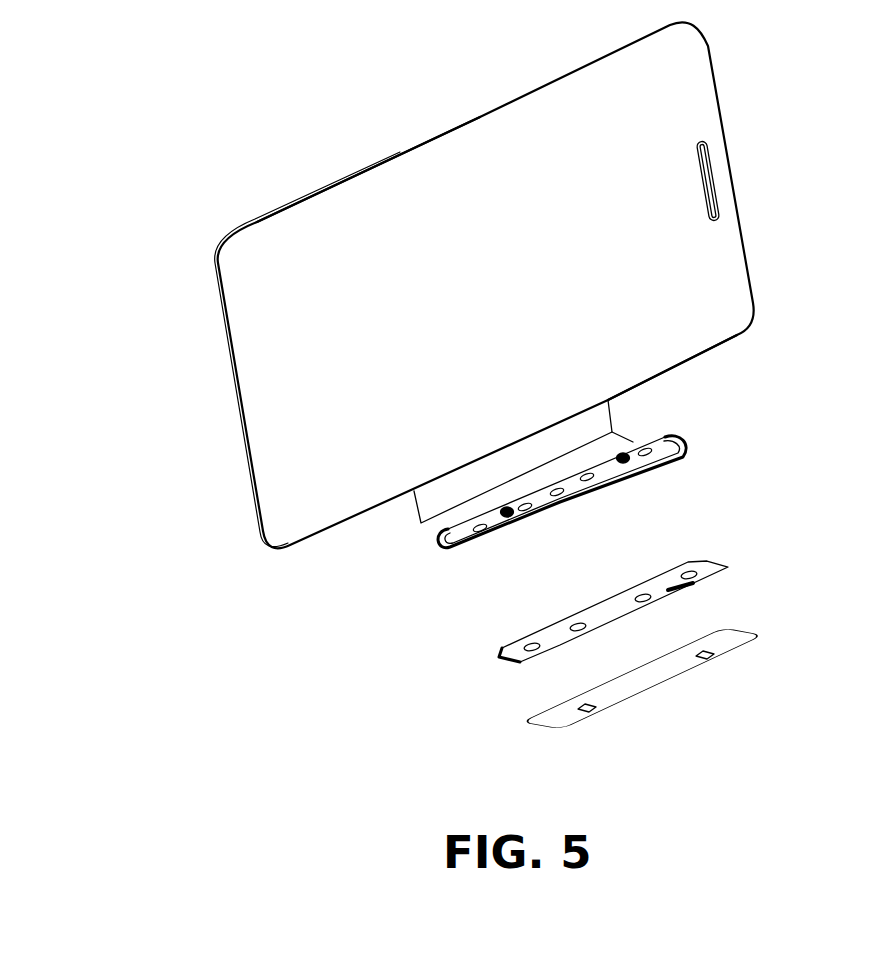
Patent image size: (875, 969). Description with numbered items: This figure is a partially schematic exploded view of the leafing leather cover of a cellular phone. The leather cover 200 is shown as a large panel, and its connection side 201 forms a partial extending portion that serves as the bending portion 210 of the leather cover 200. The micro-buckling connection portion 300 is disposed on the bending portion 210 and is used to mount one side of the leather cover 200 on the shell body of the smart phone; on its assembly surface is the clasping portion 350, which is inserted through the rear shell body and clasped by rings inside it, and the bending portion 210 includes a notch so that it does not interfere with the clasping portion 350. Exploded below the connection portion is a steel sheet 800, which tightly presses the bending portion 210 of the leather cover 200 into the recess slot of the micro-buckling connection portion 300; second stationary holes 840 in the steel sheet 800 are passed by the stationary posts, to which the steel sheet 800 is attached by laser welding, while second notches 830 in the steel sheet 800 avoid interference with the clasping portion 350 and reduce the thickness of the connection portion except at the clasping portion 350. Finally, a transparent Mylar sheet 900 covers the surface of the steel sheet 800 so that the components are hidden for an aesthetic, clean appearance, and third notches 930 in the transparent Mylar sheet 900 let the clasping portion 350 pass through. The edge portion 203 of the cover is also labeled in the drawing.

The leather cover 200 is at (295, 507).
The connection side 201 is at (690, 364).
The upper edge portion 203 is at (311, 197).
The bending portion 210 is at (582, 430).
The micro-buckling connection portion 300 is at (582, 503).
The clasping portion 350 is at (513, 530).
The steel sheet 800 is at (728, 565).
The second notches 830 is at (680, 587).
The second stationary holes 840 is at (530, 653).
The transparent Mylar sheet 900 is at (653, 677).
The third notches 930 is at (592, 710).